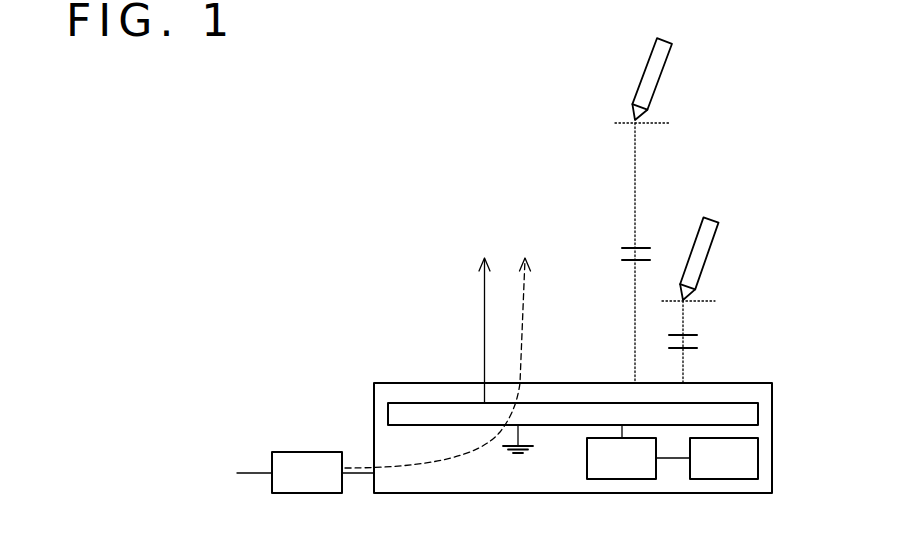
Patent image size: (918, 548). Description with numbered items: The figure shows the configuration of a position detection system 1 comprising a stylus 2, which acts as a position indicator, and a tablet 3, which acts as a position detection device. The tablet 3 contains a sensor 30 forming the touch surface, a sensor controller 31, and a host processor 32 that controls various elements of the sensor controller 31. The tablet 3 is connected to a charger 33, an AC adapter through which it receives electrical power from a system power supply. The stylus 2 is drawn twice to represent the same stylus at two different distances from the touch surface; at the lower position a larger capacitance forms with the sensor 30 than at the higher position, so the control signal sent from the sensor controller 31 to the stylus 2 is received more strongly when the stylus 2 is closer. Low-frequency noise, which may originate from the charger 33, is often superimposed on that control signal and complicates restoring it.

The position detection system 1 is at (415, 73).
The stylus 2 is at (660, 68).
The tablet 3 is at (773, 438).
The sensor 30 is at (557, 425).
The sensor controller 31 is at (634, 471).
The host processor 32 is at (736, 471).
The charger 33 is at (319, 484).